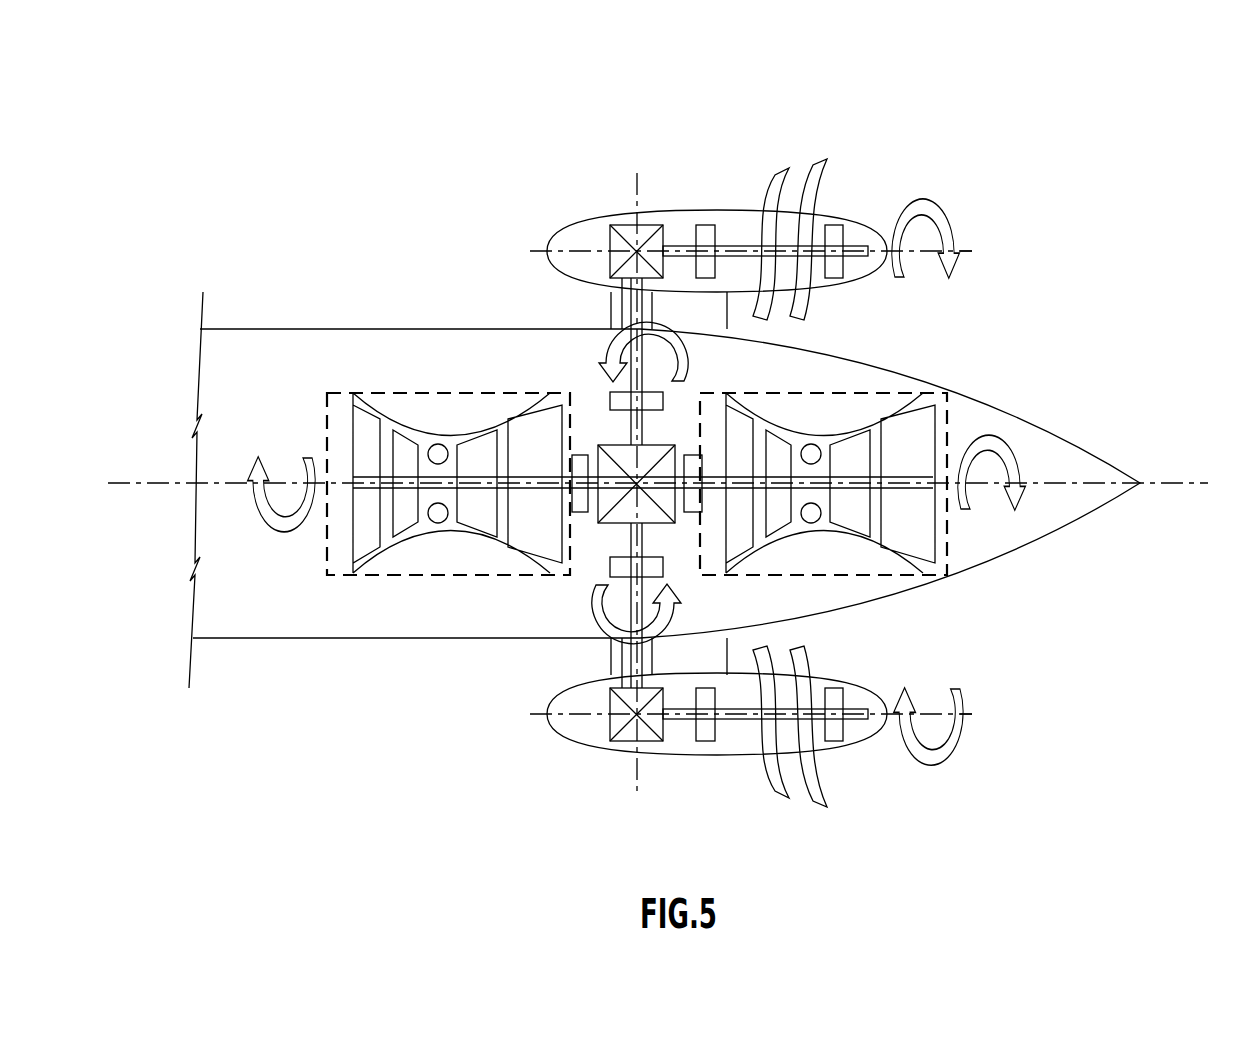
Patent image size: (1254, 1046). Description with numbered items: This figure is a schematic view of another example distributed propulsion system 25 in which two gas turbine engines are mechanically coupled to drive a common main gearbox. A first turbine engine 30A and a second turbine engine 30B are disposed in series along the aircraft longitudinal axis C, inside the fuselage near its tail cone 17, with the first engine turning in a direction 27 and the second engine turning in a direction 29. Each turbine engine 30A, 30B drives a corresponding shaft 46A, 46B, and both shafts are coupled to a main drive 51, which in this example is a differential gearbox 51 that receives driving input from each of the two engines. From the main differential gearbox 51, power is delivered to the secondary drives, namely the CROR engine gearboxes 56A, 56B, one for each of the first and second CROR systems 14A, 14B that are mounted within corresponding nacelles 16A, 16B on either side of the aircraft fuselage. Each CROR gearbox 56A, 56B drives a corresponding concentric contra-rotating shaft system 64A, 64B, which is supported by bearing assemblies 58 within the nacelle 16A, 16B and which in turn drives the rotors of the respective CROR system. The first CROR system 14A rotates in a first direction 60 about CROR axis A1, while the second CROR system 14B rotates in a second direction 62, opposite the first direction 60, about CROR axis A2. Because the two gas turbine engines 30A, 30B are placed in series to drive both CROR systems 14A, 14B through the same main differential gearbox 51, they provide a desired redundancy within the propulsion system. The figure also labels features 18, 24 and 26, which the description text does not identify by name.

The first CROR system 14A is at (950, 128).
The second CROR system 14B is at (955, 852).
The nacelle 16A is at (652, 197).
The nacelle 16B is at (655, 765).
The tail cone 17 is at (1106, 440).
The support strut 18 is at (597, 310).
The first propeller blade row 24 is at (784, 172).
The propulsion system 25 is at (1045, 302).
The second propeller blade row 26 is at (822, 175).
The direction 27 is at (1005, 460).
The direction 29 is at (270, 512).
The turbine engine 30A is at (866, 565).
The turbine engine 30B is at (433, 557).
The shaft 46A is at (913, 490).
The shaft 46B is at (533, 490).
The main differential gearbox 51 is at (652, 455).
The CROR engine gearbox 56A is at (623, 238).
The CROR engine gearbox 56B is at (617, 725).
The bearing assembly 58 is at (704, 225).
The first direction 60 is at (925, 225).
The second direction 62 is at (937, 742).
The contra-rotating shaft system 64A is at (740, 246).
The contra-rotating shaft system 64B is at (742, 723).
The CROR axis A1 is at (963, 250).
The CROR axis A2 is at (937, 740).
The aircraft longitudinal axis C is at (1178, 483).